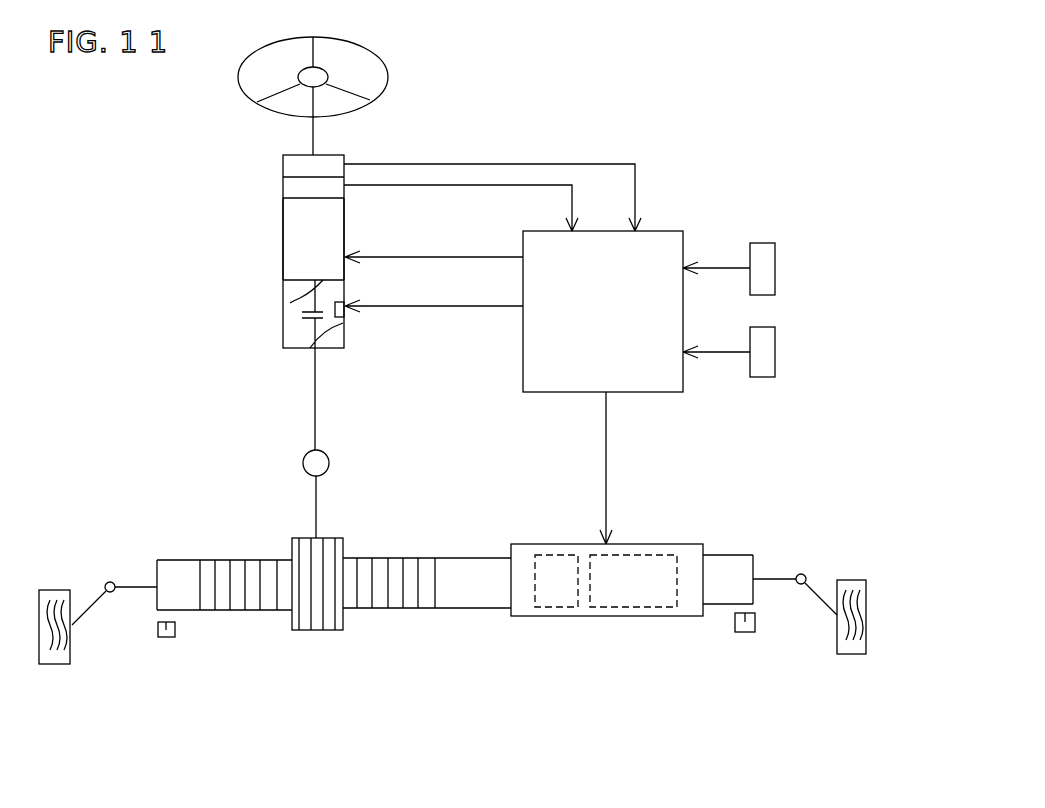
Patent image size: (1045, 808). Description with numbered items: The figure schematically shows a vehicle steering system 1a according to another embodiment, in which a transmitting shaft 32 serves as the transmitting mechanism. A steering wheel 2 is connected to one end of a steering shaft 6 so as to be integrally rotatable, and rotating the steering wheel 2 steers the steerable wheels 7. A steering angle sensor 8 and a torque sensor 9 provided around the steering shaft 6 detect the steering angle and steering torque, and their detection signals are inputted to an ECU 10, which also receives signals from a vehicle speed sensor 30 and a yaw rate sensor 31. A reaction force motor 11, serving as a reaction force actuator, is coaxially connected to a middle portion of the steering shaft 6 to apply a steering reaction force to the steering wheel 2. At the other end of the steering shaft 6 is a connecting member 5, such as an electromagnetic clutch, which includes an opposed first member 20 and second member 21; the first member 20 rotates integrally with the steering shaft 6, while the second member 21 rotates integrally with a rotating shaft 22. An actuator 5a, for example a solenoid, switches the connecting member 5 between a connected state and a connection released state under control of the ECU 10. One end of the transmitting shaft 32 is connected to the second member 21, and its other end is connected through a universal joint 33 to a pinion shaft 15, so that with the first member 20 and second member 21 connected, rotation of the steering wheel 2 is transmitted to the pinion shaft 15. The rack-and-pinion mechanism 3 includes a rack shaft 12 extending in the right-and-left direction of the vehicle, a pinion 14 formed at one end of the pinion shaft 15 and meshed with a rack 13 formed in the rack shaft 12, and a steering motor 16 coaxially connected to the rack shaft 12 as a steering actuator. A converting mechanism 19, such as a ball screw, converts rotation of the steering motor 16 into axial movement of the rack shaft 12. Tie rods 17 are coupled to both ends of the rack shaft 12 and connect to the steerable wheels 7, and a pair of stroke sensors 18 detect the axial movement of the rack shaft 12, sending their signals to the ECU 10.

The vehicle steering system 1a is at (572, 113).
The steering wheel 2 is at (388, 77).
The rack-and-pinion mechanism 3 is at (683, 503).
The connecting member 5 is at (212, 296).
The actuator 5a is at (344, 299).
The steering shaft 6 is at (313, 133).
The steerable wheels 7 is at (55, 590).
The steering angle sensor 8 is at (290, 166).
The torque sensor 9 is at (290, 192).
The ECU 10 is at (658, 239).
The reaction force motor 11 is at (290, 250).
The rack shaft 12 is at (487, 620).
The rack 13 is at (383, 610).
The pinion 14 is at (318, 618).
The pinion shaft 15 is at (316, 508).
The steering motor 16 is at (651, 608).
The tie rods 17 is at (88, 612).
The stroke sensors 18 is at (165, 638).
The converting mechanism 19 is at (565, 608).
The first member 20 is at (290, 303).
The second member 21 is at (305, 320).
The rotating shaft 22 is at (343, 327).
The vehicle speed sensor 30 is at (775, 268).
The yaw rate sensor 31 is at (775, 352).
The transmitting shaft 32 is at (315, 403).
The universal joint 33 is at (303, 463).